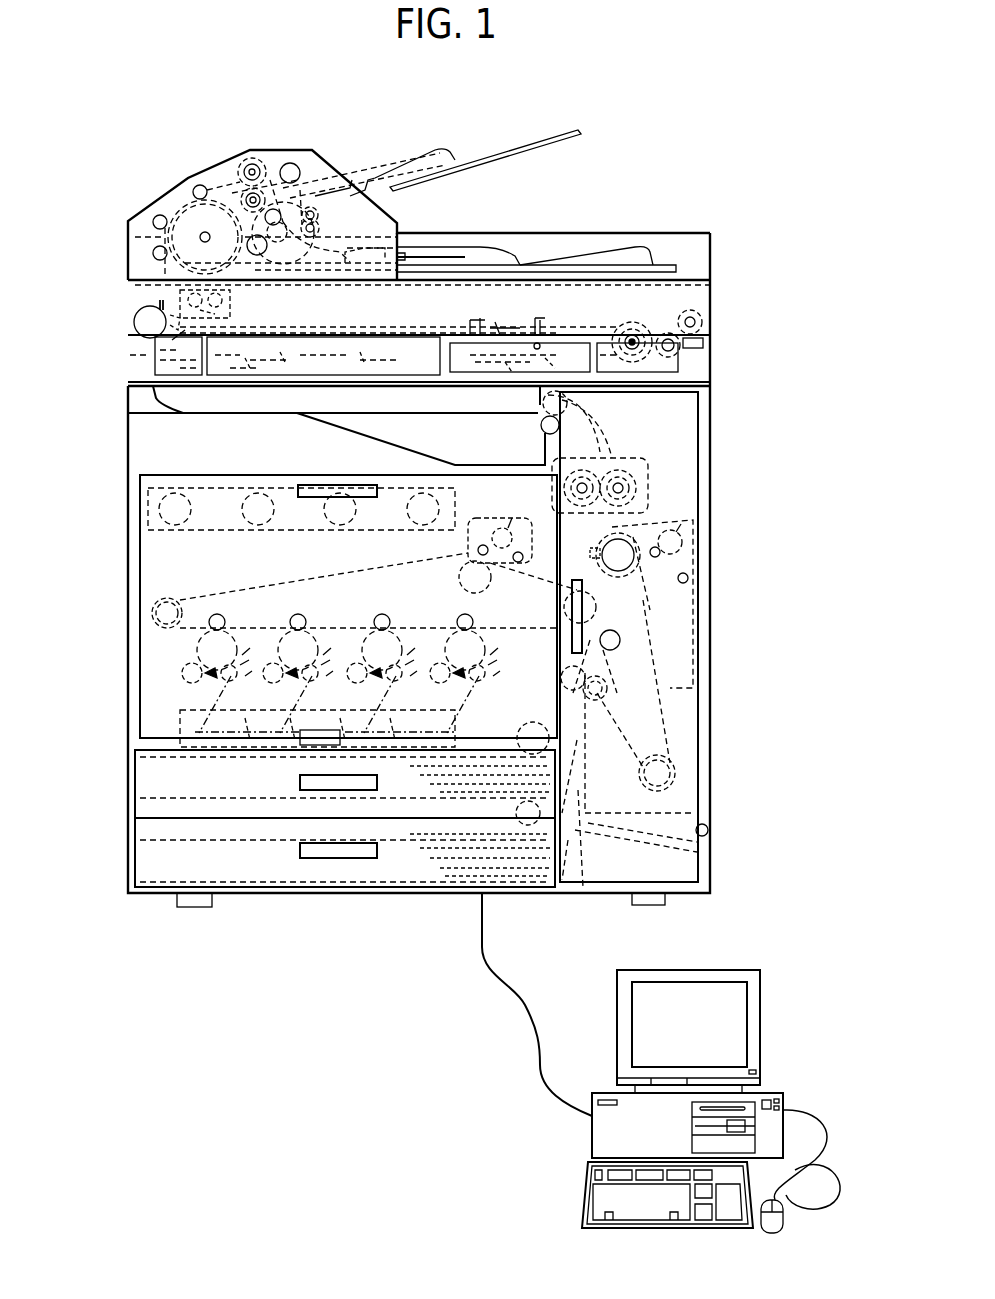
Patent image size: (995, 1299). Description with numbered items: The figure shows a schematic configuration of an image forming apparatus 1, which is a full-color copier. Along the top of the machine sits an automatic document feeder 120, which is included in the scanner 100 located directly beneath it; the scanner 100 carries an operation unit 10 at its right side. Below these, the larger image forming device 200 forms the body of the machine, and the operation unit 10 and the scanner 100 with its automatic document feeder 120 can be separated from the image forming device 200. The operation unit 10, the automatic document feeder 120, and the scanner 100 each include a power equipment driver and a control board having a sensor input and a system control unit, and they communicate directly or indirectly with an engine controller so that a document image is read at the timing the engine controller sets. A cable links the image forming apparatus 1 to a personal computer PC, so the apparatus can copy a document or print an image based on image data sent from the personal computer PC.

The image forming apparatus 1 is at (463, 135).
The automatic document feeder 120 is at (118, 215).
The scanner 100 is at (118, 302).
The image forming device 200 is at (118, 543).
The operation unit 10 is at (688, 358).
The personal computer PC is at (748, 958).